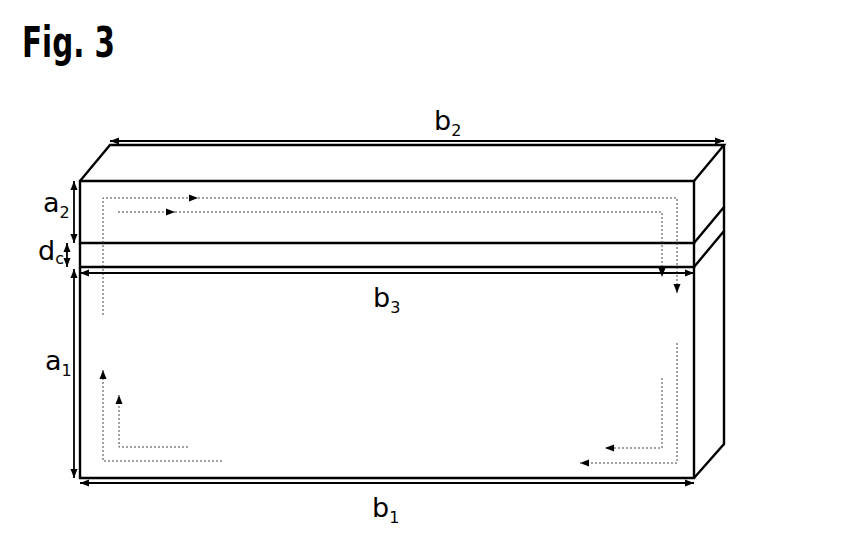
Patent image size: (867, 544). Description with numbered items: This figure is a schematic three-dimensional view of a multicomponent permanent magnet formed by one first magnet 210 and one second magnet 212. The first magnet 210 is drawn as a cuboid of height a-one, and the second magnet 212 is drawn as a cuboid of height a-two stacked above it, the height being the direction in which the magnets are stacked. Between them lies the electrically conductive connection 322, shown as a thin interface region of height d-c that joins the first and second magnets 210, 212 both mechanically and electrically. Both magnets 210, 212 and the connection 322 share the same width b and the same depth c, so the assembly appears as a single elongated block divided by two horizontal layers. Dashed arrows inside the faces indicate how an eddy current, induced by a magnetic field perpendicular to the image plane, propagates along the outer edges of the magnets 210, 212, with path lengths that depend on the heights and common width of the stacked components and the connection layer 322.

The first magnet 210 is at (694, 375).
The second magnet 212 is at (694, 203).
The electrically conductive connection 322 is at (694, 253).